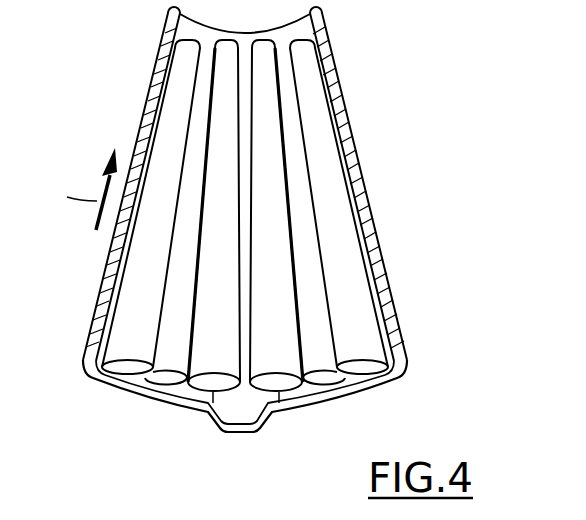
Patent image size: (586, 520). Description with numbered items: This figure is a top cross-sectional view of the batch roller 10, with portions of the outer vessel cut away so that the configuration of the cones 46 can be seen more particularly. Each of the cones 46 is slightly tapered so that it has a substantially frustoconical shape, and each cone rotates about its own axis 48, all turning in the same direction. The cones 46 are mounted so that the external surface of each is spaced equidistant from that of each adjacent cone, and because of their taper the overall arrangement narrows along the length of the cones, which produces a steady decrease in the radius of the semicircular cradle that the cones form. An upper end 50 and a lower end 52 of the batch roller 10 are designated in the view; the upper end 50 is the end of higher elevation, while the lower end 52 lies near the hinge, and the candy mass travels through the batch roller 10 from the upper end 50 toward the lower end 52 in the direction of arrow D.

The batch roller 10 is at (122, 81).
The cones 46 is at (272, 146).
The axis 48 is at (368, 407).
The upper end 50 is at (403, 341).
The lower end 52 is at (330, 42).